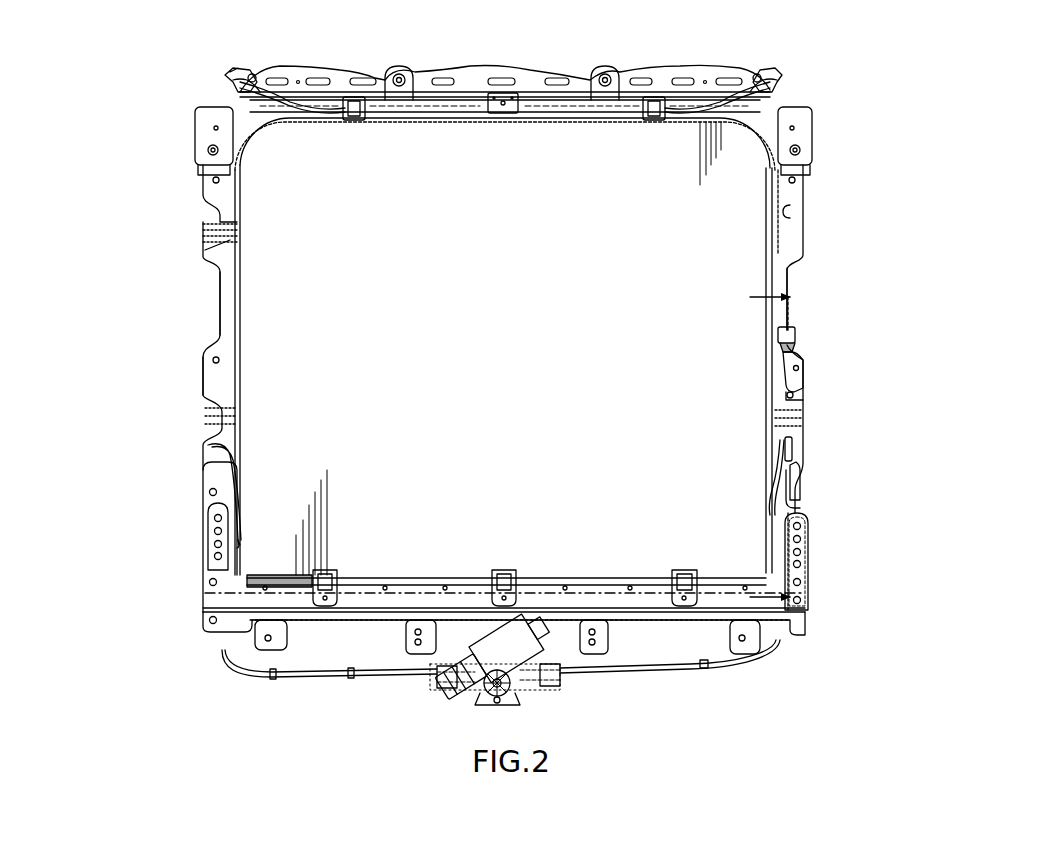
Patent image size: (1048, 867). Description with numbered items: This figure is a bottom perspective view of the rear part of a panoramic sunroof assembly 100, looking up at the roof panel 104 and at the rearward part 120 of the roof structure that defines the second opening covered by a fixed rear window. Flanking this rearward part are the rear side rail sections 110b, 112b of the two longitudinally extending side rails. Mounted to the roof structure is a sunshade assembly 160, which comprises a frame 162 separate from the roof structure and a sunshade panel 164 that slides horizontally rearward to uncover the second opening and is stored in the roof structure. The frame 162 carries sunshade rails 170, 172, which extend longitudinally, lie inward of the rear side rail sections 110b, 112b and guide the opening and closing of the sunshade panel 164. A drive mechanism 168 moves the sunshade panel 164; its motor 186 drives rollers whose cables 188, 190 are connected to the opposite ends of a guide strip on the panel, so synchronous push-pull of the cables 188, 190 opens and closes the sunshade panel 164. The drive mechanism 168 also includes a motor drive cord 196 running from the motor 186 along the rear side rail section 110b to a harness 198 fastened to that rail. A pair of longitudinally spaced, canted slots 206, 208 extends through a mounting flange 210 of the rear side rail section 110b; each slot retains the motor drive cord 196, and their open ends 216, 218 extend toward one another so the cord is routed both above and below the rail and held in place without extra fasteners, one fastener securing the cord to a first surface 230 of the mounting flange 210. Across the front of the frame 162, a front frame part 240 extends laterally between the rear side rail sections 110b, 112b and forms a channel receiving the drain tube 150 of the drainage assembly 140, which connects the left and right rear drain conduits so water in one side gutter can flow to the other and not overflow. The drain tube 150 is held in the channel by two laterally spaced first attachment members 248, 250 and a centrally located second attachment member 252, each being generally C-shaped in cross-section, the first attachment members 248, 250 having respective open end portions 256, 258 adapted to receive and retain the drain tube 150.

The panoramic sunroof assembly 100 is at (940, 97).
The roof panel 104 is at (350, 78).
The rear side rail section 110b is at (795, 236).
The rear side rail section 112b is at (218, 246).
The rearward part 120 is at (860, 404).
The drainage assembly 140 is at (553, 98).
The drain tube 150 is at (455, 97).
The sunshade assembly 160 is at (262, 380).
The frame 162 is at (232, 440).
The sunshade panel 164 is at (748, 215).
The drive mechanism 168 is at (596, 690).
The sunshade rail 170 is at (780, 278).
The sunshade rail 172 is at (228, 318).
The motor 186 is at (517, 628).
The cable 188 is at (690, 668).
The cable 190 is at (385, 672).
The motor drive cord 196 is at (803, 503).
The harness 198 is at (792, 340).
The slot 206 is at (790, 458).
The slot 208 is at (778, 372).
The mounting flange 210 is at (800, 445).
The open end 216 is at (798, 465).
The open end 218 is at (790, 383).
The first surface 230 is at (800, 486).
The front frame part 240 is at (792, 118).
The first attachment member 248 is at (652, 118).
The first attachment member 250 is at (353, 118).
The second attachment member 252 is at (500, 113).
The open end portion 256 is at (662, 97).
The open end portion 258 is at (345, 100).